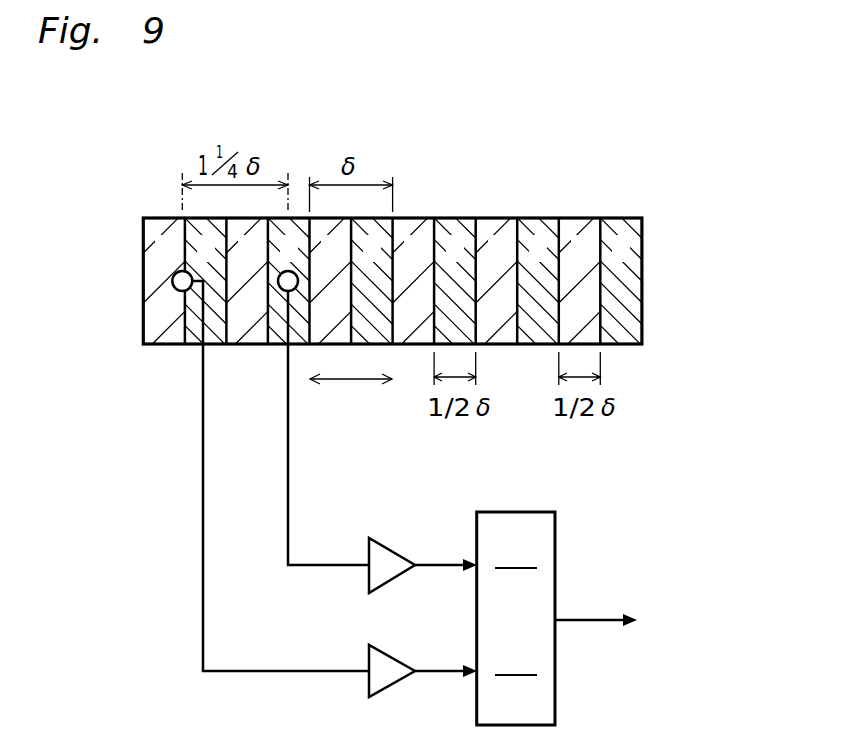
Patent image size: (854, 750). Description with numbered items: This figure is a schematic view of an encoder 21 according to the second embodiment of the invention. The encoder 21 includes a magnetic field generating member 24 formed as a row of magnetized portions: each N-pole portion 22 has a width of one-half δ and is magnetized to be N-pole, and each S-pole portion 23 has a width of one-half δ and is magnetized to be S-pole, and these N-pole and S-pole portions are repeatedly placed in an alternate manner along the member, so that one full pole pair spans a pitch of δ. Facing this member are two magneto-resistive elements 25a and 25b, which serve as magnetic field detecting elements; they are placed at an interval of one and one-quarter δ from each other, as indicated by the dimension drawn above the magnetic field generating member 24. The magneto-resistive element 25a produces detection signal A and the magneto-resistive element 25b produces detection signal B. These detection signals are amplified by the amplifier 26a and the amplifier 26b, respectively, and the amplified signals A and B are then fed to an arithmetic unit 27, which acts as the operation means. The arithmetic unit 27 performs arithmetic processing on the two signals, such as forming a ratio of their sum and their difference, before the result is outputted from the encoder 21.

The encoder 21 is at (302, 142).
The N-pole portion 22 is at (413, 218).
The S-pole portion 23 is at (455, 218).
The magnetic field generating member 24 is at (163, 197).
The magneto-resistive element 25a is at (281, 290).
The magneto-resistive element 25b is at (178, 290).
The amplifier 26a is at (395, 547).
The amplifier 26b is at (387, 688).
The arithmetic unit 27 is at (512, 512).